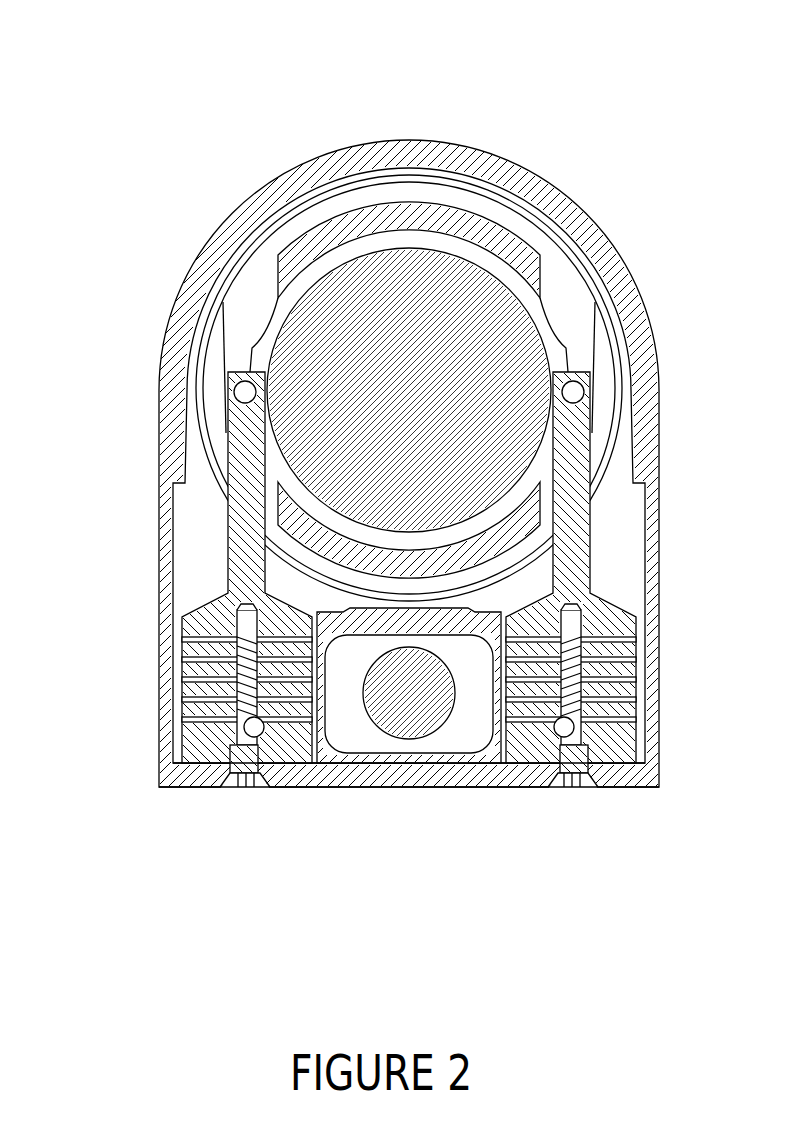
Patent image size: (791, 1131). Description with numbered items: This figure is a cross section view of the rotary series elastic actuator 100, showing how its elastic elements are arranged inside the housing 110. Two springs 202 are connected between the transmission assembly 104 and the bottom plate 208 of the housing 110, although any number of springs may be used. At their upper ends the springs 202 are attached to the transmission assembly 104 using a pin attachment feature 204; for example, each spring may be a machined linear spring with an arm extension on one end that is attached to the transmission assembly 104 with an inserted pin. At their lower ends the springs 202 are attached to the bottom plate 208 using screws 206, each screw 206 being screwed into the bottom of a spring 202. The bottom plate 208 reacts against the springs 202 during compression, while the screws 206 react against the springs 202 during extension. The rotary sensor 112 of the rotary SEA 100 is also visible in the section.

The rotary series elastic actuator 100 is at (377, 451).
The transmission assembly 104 is at (318, 224).
The housing 110 is at (150, 752).
The rotary sensor 112 is at (397, 760).
The springs 202 is at (192, 596).
The pin attachment feature 204 is at (222, 391).
The screws 206 is at (242, 796).
The bottom plate 208 is at (455, 796).